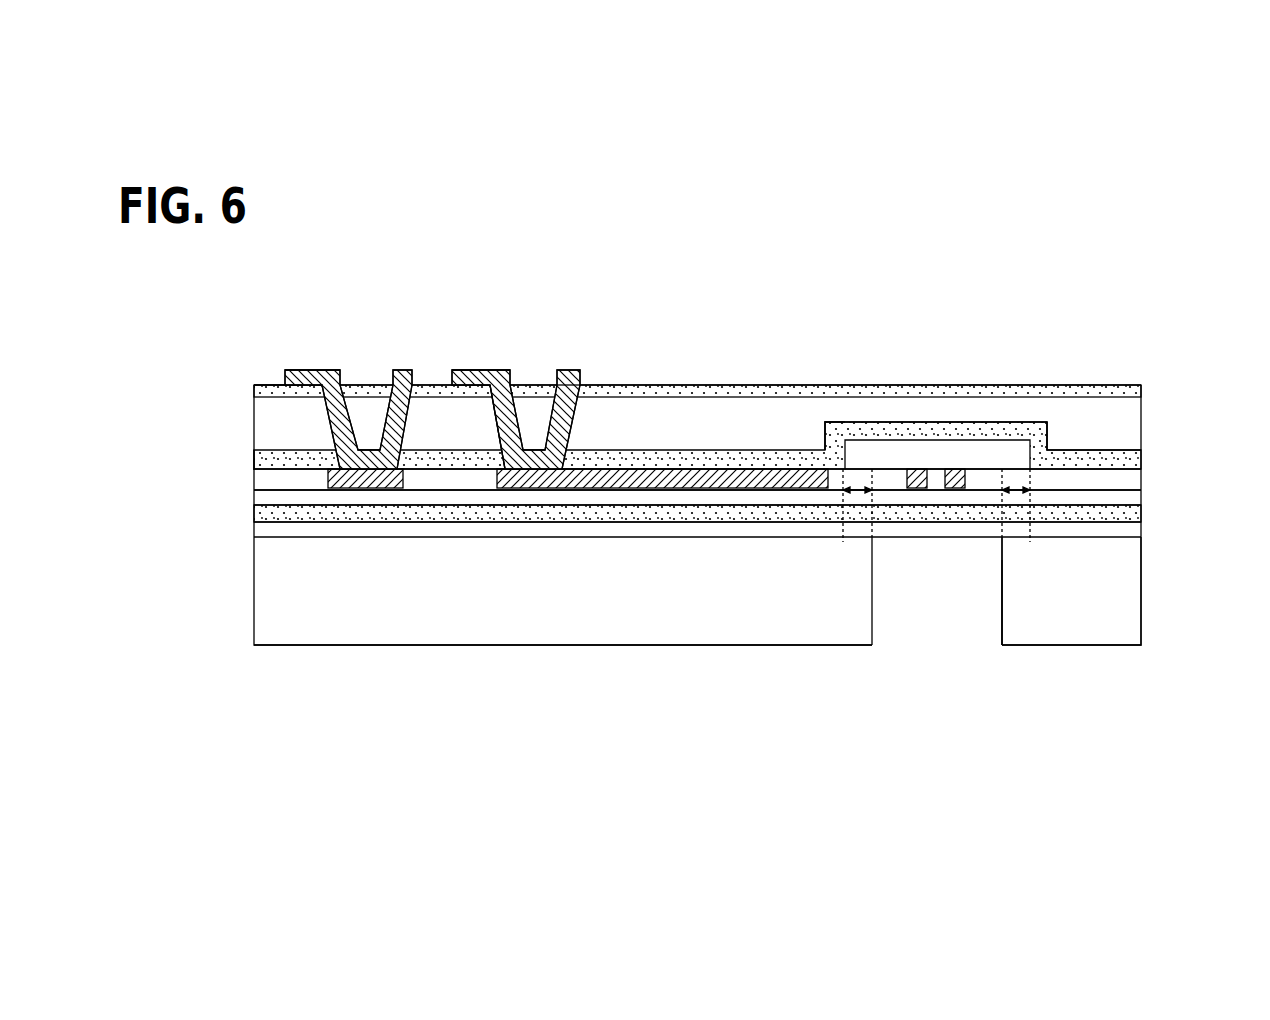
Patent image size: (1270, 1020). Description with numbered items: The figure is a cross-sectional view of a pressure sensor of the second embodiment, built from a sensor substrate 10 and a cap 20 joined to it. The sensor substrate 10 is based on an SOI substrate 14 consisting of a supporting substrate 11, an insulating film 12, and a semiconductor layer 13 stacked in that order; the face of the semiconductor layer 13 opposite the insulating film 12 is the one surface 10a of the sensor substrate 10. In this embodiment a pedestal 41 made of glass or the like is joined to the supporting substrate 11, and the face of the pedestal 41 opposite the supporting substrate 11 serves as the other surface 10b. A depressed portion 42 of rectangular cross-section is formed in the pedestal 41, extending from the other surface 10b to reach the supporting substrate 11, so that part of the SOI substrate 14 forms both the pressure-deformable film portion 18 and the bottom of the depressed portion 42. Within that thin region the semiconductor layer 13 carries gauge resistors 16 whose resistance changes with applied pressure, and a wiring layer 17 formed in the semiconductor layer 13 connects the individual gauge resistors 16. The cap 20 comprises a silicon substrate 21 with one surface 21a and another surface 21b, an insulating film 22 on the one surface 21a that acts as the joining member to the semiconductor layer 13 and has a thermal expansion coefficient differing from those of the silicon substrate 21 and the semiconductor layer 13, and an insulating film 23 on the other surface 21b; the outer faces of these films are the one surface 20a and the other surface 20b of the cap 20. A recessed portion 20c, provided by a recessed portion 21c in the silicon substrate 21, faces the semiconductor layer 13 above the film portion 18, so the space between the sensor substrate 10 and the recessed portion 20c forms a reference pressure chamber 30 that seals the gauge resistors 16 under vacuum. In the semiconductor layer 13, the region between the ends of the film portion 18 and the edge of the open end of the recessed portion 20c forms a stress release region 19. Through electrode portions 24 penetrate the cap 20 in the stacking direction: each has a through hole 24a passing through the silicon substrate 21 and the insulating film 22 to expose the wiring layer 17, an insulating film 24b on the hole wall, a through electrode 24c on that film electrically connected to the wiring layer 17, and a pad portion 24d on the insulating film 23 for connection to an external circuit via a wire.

The sensor substrate 10 is at (236, 566).
The one surface of the sensor substrate 10a is at (255, 458).
The other surface of the sensor substrate 10b is at (262, 645).
The supporting substrate 11 is at (1130, 537).
The insulating film 12 is at (1130, 512).
The semiconductor layer 13 is at (1130, 490).
The SOI substrate 14 is at (761, 524).
The gauge resistors 16 is at (924, 476).
The wiring layer 17 is at (681, 478).
The film portion 18 is at (937, 581).
The stress release region 19 is at (856, 492).
The cap 20 is at (642, 400).
The one surface of the cap 20a is at (280, 470).
The other surface of the cap 20b is at (258, 384).
The recessed portion 20c is at (846, 445).
The silicon substrate 21 is at (747, 396).
The one surface of the silicon substrate 21a is at (1110, 450).
The other surface of the silicon substrate 21b is at (1125, 395).
The recessed portion of the silicon substrate 21c is at (1038, 452).
The insulating film 22 is at (1130, 463).
The insulating film 23 is at (1125, 386).
The through electrode portions 24 is at (448, 363).
The through hole 24a is at (581, 364).
The insulating film 24b is at (538, 394).
The through electrode 24c is at (524, 400).
The pad portion 24d is at (468, 371).
The reference pressure chamber 30 is at (962, 453).
The pedestal 41 is at (1130, 603).
The depressed portion 42 is at (1003, 596).